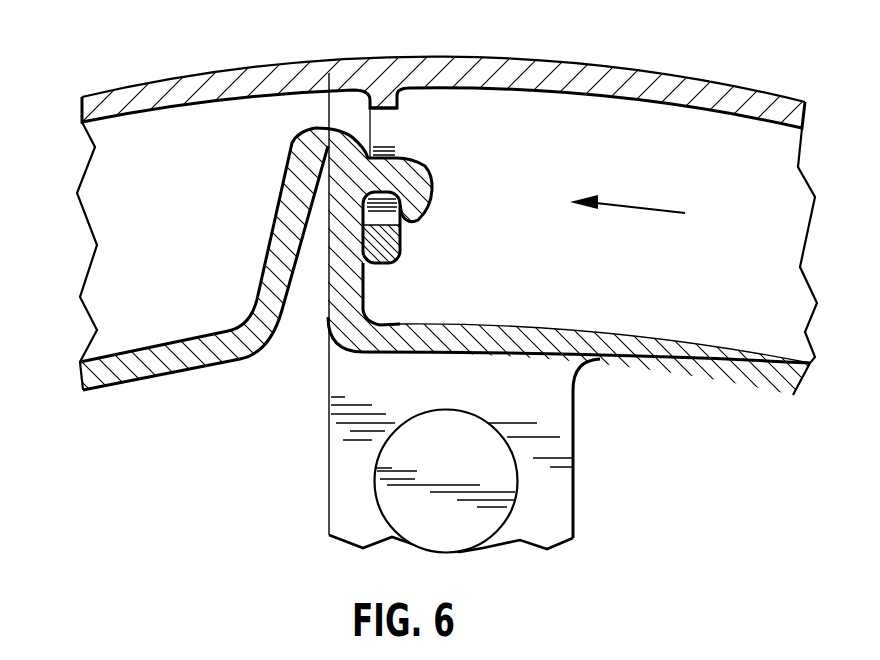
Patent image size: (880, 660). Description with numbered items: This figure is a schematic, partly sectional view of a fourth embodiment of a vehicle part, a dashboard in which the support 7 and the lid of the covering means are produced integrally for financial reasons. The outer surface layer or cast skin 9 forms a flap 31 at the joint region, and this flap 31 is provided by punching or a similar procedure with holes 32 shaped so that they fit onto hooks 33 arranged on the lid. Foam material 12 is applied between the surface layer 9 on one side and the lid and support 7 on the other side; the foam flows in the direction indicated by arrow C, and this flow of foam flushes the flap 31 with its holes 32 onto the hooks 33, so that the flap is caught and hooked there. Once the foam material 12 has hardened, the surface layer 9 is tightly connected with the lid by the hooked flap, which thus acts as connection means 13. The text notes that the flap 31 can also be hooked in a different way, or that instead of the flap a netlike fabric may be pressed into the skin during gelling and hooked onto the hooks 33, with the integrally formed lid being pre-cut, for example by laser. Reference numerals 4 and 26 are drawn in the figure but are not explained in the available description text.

The roof rail 4 is at (553, 509).
The support 7 is at (177, 365).
The surface layer or cast skin 9 is at (290, 78).
The foam material 12 is at (127, 250).
The connection means 13 is at (384, 267).
The joint 26 is at (335, 82).
The flap 31 is at (388, 245).
The holes 32 is at (385, 120).
The hooks 33 is at (412, 172).
The foam flow direction arrow C is at (604, 207).